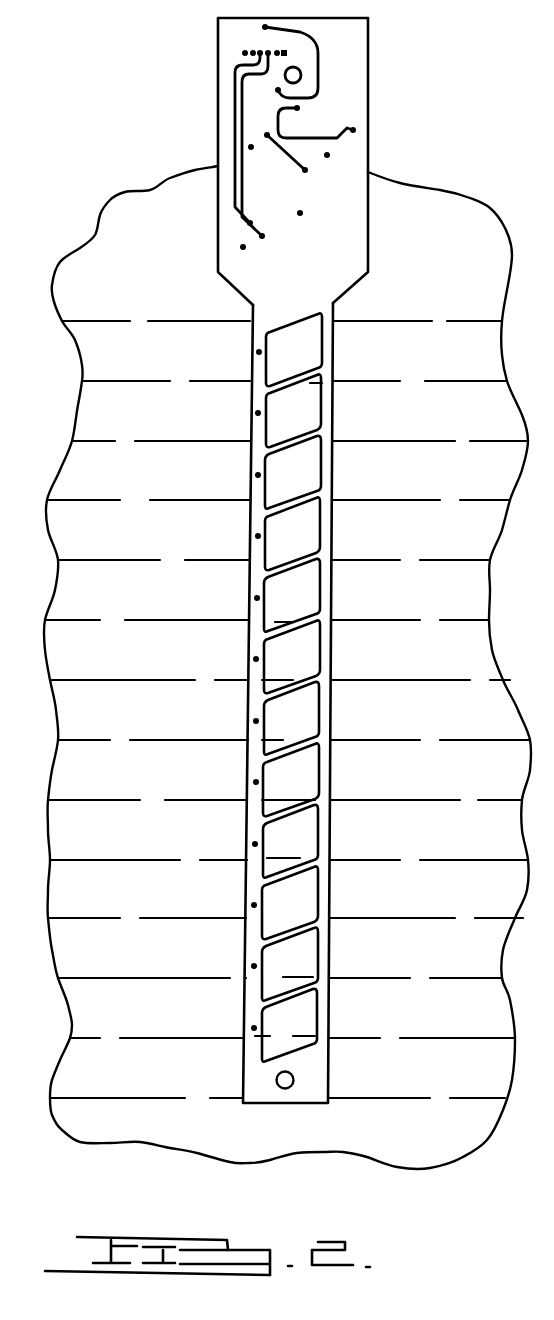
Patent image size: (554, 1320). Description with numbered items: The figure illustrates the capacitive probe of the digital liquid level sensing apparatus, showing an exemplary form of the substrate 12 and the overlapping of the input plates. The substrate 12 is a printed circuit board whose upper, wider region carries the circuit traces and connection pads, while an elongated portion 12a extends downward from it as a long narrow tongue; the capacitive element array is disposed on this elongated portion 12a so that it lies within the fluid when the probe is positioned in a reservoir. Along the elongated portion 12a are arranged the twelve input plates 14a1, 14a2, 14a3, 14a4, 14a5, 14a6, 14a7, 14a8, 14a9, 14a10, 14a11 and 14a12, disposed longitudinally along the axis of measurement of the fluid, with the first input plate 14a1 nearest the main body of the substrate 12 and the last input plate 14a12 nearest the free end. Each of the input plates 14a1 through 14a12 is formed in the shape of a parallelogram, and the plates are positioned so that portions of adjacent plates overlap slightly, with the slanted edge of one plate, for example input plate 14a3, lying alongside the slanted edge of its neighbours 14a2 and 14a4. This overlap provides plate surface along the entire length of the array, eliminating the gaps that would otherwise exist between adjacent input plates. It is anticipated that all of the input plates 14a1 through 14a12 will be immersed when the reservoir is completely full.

The substrate 12 is at (357, 72).
The elongated strip portion of circuit board 12a is at (256, 308).
The input plate 14a1 is at (322, 353).
The input plate 14a2 is at (321, 415).
The input plate 14a3 is at (321, 478).
The input plate 14a4 is at (320, 535).
The input plate 14a5 is at (320, 598).
The input plate 14a6 is at (320, 652).
The input plate 14a7 is at (319, 715).
The input plate 14a8 is at (319, 773).
The input plate 14a9 is at (318, 835).
The input plate 14a10 is at (318, 893).
The input plate 14a11 is at (318, 952).
The input plate 14a12 is at (317, 1012).